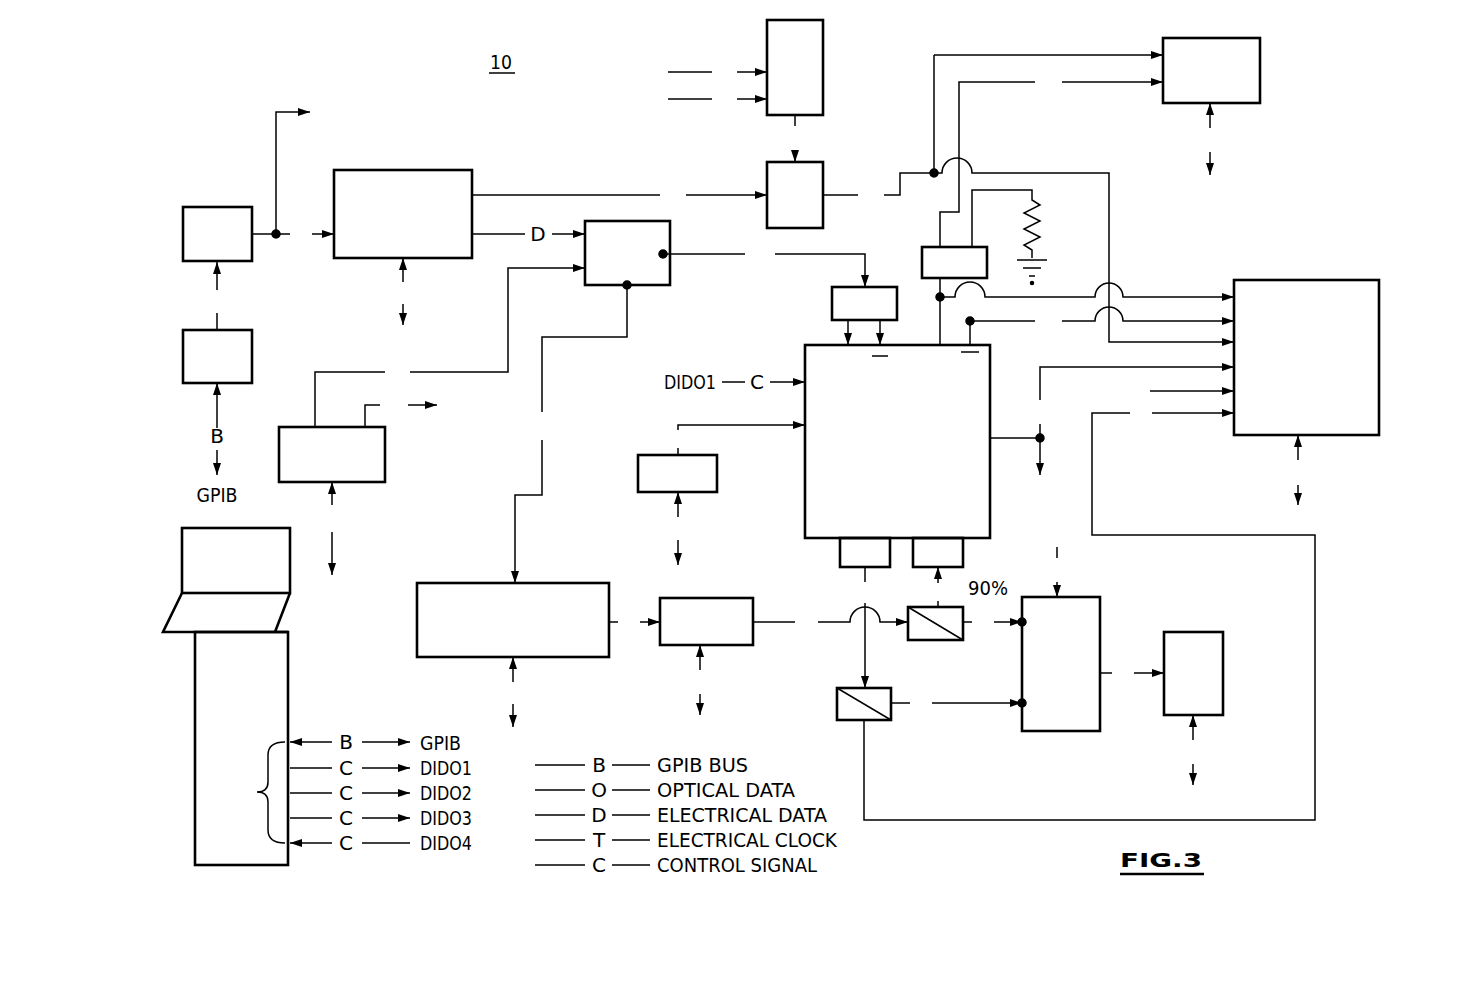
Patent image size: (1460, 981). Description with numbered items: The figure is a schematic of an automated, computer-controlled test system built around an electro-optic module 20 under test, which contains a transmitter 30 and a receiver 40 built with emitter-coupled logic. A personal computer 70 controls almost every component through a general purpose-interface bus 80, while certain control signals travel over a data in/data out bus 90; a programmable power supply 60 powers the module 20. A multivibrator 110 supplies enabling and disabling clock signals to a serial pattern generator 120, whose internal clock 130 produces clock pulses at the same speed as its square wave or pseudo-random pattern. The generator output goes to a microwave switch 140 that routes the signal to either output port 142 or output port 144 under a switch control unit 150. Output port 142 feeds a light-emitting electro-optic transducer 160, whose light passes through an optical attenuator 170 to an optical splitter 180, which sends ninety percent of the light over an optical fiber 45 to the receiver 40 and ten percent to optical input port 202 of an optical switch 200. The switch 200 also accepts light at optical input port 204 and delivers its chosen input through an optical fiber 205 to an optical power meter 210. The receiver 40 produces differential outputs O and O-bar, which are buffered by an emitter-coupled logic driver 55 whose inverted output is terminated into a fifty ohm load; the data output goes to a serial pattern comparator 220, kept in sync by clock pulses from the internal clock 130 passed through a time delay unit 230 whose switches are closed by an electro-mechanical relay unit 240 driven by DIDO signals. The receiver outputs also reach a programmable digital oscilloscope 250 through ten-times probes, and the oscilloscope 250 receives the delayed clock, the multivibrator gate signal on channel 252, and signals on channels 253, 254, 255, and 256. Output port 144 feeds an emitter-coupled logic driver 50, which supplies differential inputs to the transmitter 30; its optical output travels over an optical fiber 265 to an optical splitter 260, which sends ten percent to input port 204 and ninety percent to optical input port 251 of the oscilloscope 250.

The electro-optic module 20 is at (835, 458).
The transmitter 30 is at (840, 560).
The receiver 40 is at (963, 560).
The optical fiber 45 is at (930, 582).
The single input-differential output emitter-coupled logic driver 50 is at (840, 300).
The emitter-coupled logic driver 55 is at (937, 262).
The programmable power supply 60 is at (660, 478).
The electronic personal computer 70 is at (270, 683).
The general purpose-interface bus 80 is at (197, 718).
The data in/data out bus 90 is at (197, 797).
The multivibrator 110 is at (256, 250).
The serial pattern generator 120 is at (370, 178).
The internal clock 130 is at (462, 182).
The microwave switch 140 is at (660, 238).
The output port 142 is at (630, 290).
The output port 144 is at (665, 258).
The switch control unit 150 is at (370, 450).
The light-emitting, electro-optic transducer 160 is at (545, 590).
The optical attenuator 170 is at (680, 636).
The optical splitter 180 is at (945, 640).
The optical switch 200 is at (1065, 605).
The optical input port 202 is at (1025, 620).
The optical input port 204 is at (1025, 708).
The optical fiber 205 is at (1105, 680).
The optical power meter 210 is at (1175, 640).
The serial pattern comparator 220 is at (1245, 62).
The time delay unit 230 is at (780, 170).
The electro-mechanical relay unit 240 is at (808, 45).
The programmable digital oscilloscope 250 is at (1365, 352).
The optical input port 251 is at (1230, 417).
The Gate input channel 252 is at (1230, 394).
The channel 253 is at (1230, 366).
The channel 254 is at (1230, 344).
The channel 255 is at (1230, 322).
The channel 256 is at (1245, 282).
The optical splitter 260 is at (855, 715).
The optical fiber 265 is at (860, 662).